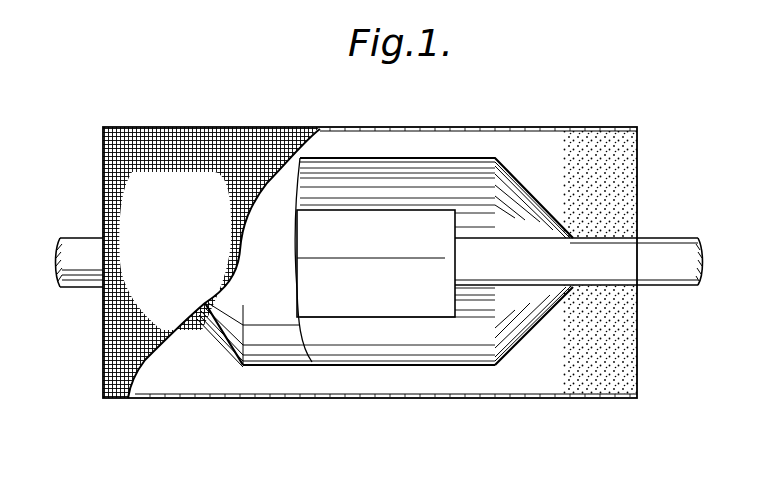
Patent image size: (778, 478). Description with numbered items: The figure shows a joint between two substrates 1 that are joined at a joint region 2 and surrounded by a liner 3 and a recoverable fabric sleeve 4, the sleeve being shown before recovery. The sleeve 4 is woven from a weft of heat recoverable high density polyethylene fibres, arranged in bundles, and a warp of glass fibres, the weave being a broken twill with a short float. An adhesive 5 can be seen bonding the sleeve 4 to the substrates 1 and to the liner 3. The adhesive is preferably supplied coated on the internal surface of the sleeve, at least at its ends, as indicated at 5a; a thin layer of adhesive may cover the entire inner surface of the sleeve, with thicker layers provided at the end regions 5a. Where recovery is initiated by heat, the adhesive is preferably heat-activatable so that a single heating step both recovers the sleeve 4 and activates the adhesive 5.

The substrate 1 is at (80, 272).
The joint region 2 is at (432, 222).
The liner 3 is at (520, 352).
The recoverable fabric sleeve 4 is at (188, 165).
The adhesive 5 is at (620, 334).
The adhesive end region 5a is at (563, 404).